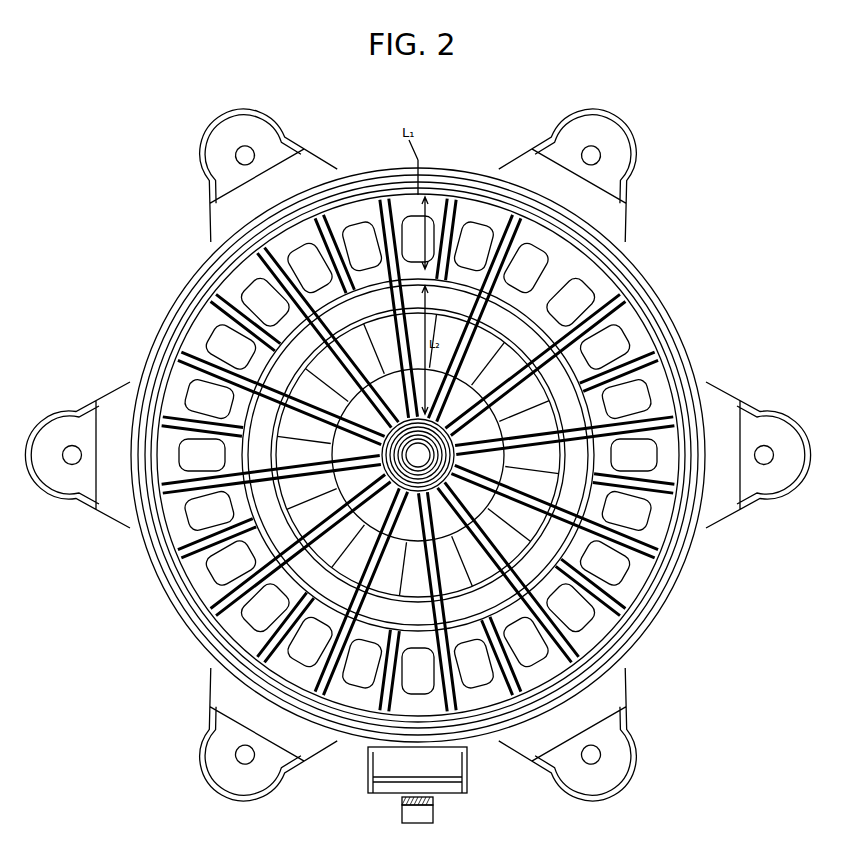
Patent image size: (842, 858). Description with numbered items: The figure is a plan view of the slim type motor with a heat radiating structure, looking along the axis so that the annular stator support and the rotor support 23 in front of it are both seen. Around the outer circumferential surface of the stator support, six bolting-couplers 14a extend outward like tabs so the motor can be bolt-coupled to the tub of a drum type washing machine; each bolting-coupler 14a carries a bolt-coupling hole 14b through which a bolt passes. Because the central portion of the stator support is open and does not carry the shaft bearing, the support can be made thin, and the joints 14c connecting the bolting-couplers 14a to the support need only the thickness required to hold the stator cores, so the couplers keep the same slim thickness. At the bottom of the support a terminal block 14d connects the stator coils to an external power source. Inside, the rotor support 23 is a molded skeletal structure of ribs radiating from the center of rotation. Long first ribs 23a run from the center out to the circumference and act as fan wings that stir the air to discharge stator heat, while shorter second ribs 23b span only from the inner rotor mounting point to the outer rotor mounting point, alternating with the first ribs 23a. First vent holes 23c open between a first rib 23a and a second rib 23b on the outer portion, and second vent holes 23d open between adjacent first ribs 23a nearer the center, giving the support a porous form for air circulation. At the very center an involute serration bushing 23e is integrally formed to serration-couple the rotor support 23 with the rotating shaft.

The bolting-coupler 14a is at (627, 128).
The bolt-coupling hole 14b is at (605, 157).
The joint 14c is at (600, 212).
The terminal block 14d is at (437, 812).
The rotor support 23 is at (667, 292).
The first rib 23a is at (330, 750).
The second rib 23b is at (612, 590).
The first vent hole 23c is at (205, 585).
The second vent hole 23d is at (185, 525).
The involute serration bushing 23e is at (545, 408).